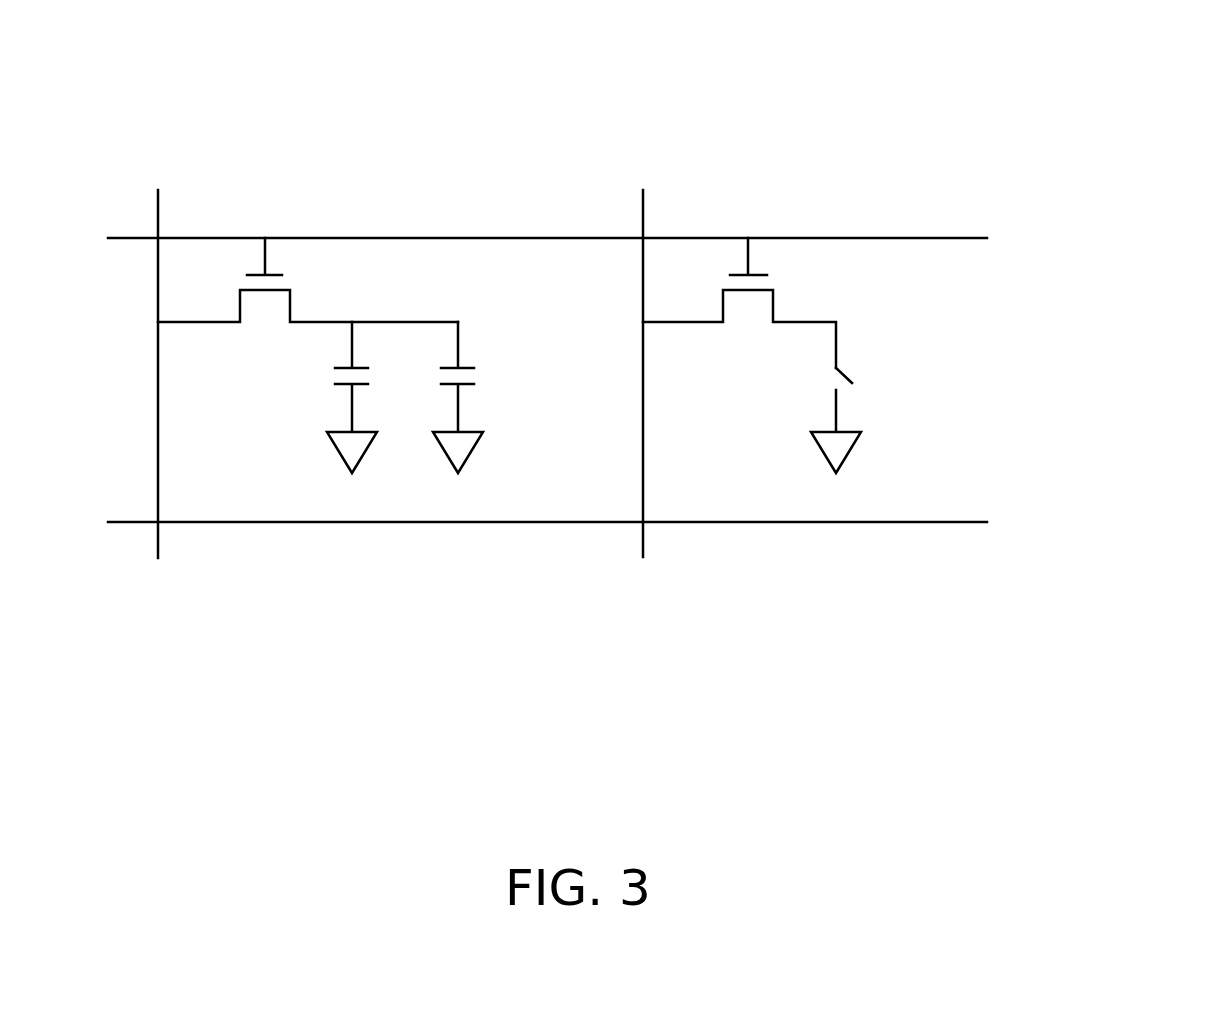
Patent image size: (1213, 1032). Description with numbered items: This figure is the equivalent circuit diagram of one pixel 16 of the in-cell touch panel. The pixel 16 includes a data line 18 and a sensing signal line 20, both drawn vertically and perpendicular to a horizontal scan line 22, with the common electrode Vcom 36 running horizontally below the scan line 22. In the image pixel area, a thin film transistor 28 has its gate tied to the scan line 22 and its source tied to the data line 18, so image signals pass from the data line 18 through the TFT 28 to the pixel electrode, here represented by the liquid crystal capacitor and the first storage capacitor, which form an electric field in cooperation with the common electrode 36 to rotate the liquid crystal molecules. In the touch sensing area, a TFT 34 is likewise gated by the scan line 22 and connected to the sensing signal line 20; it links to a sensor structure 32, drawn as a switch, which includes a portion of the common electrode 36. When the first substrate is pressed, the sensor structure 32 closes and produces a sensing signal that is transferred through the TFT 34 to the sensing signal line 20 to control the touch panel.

The pixel 16 is at (1048, 112).
The data line 18 is at (156, 218).
The sensing signal line 20 is at (641, 218).
The scan line 22 is at (127, 237).
The thin film transistor 28 is at (300, 276).
The sensor structure 32 is at (853, 392).
The TFT 34 is at (785, 276).
The common electrode 36 is at (127, 521).